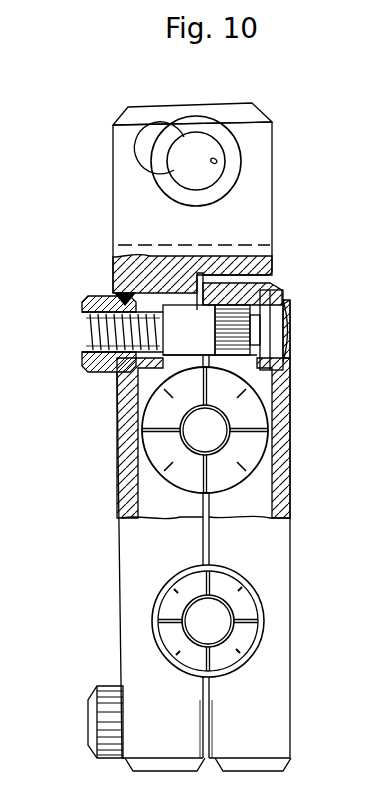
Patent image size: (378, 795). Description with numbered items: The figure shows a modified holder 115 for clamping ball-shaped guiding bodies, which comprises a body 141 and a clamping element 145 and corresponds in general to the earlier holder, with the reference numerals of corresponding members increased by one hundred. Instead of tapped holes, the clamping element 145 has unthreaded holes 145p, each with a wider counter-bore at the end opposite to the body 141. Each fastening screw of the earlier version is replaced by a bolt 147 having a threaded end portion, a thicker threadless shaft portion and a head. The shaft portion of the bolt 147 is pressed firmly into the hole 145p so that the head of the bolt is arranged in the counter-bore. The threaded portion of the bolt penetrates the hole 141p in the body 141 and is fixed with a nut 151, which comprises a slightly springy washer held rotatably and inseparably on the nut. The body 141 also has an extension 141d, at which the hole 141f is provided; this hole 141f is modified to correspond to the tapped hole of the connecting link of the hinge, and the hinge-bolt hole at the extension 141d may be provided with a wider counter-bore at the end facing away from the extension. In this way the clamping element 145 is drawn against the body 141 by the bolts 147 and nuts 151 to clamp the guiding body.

The holder 115 is at (108, 214).
The body 141 is at (118, 448).
The extension 141d is at (272, 215).
The hole 141f is at (218, 162).
The hole 141p is at (113, 282).
The clamping element 145 is at (290, 395).
The unthreaded hole 145p is at (285, 300).
The bolt 147 is at (282, 325).
The nut 151 is at (87, 302).